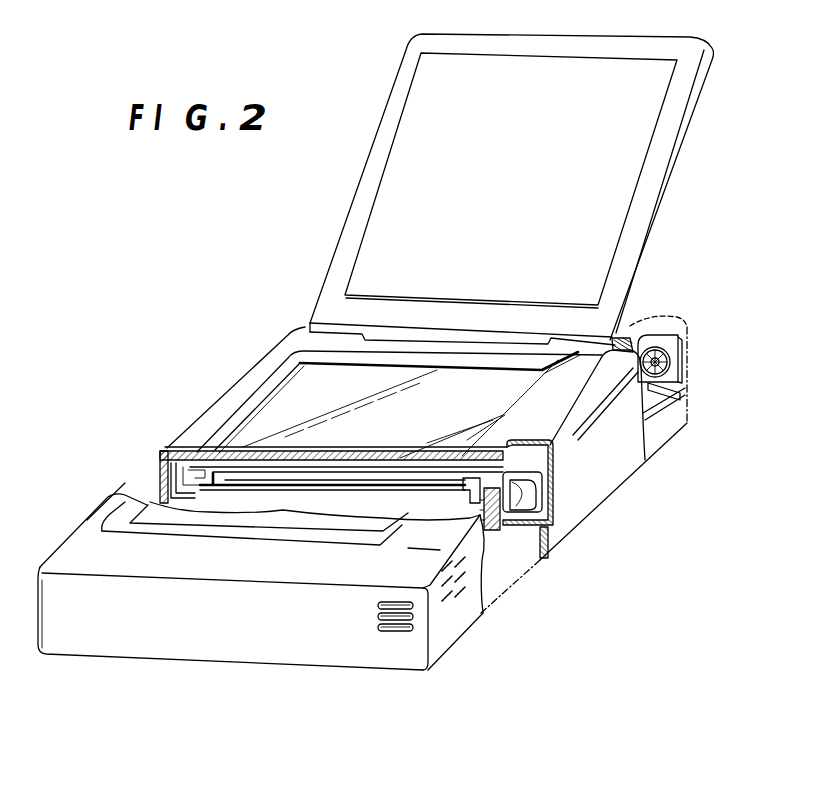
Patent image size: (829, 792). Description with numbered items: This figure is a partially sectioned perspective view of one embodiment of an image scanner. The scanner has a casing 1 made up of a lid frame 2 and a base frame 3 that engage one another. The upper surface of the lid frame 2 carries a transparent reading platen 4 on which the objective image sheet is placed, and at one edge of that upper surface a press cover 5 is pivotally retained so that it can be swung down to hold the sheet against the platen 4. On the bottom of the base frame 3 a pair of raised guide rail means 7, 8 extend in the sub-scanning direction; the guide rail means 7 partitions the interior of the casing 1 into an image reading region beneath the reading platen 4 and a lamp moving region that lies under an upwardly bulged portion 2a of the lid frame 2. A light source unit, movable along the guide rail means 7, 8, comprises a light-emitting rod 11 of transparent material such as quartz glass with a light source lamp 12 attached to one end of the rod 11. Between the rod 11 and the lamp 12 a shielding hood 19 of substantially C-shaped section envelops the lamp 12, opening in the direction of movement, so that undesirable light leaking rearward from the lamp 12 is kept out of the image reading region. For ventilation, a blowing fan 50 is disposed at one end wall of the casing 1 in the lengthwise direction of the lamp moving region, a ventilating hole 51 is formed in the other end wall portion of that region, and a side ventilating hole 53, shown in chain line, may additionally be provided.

The casing 1 is at (447, 464).
The lid frame 2 is at (603, 470).
The upwardly bulged portion 2a is at (580, 398).
The base frame 3 is at (656, 425).
The transparent reading platen 4 is at (300, 390).
The press cover 5 is at (388, 220).
The guide rail means 7 is at (490, 530).
The guide rail means 8 is at (162, 482).
The light-emitting rod 11 is at (240, 470).
The light source lamp 12 is at (530, 503).
The shielding hood 19 is at (527, 490).
The blowing fan 50 is at (660, 340).
The ventilating hole 51 is at (400, 618).
The side ventilating hole 53 is at (452, 598).